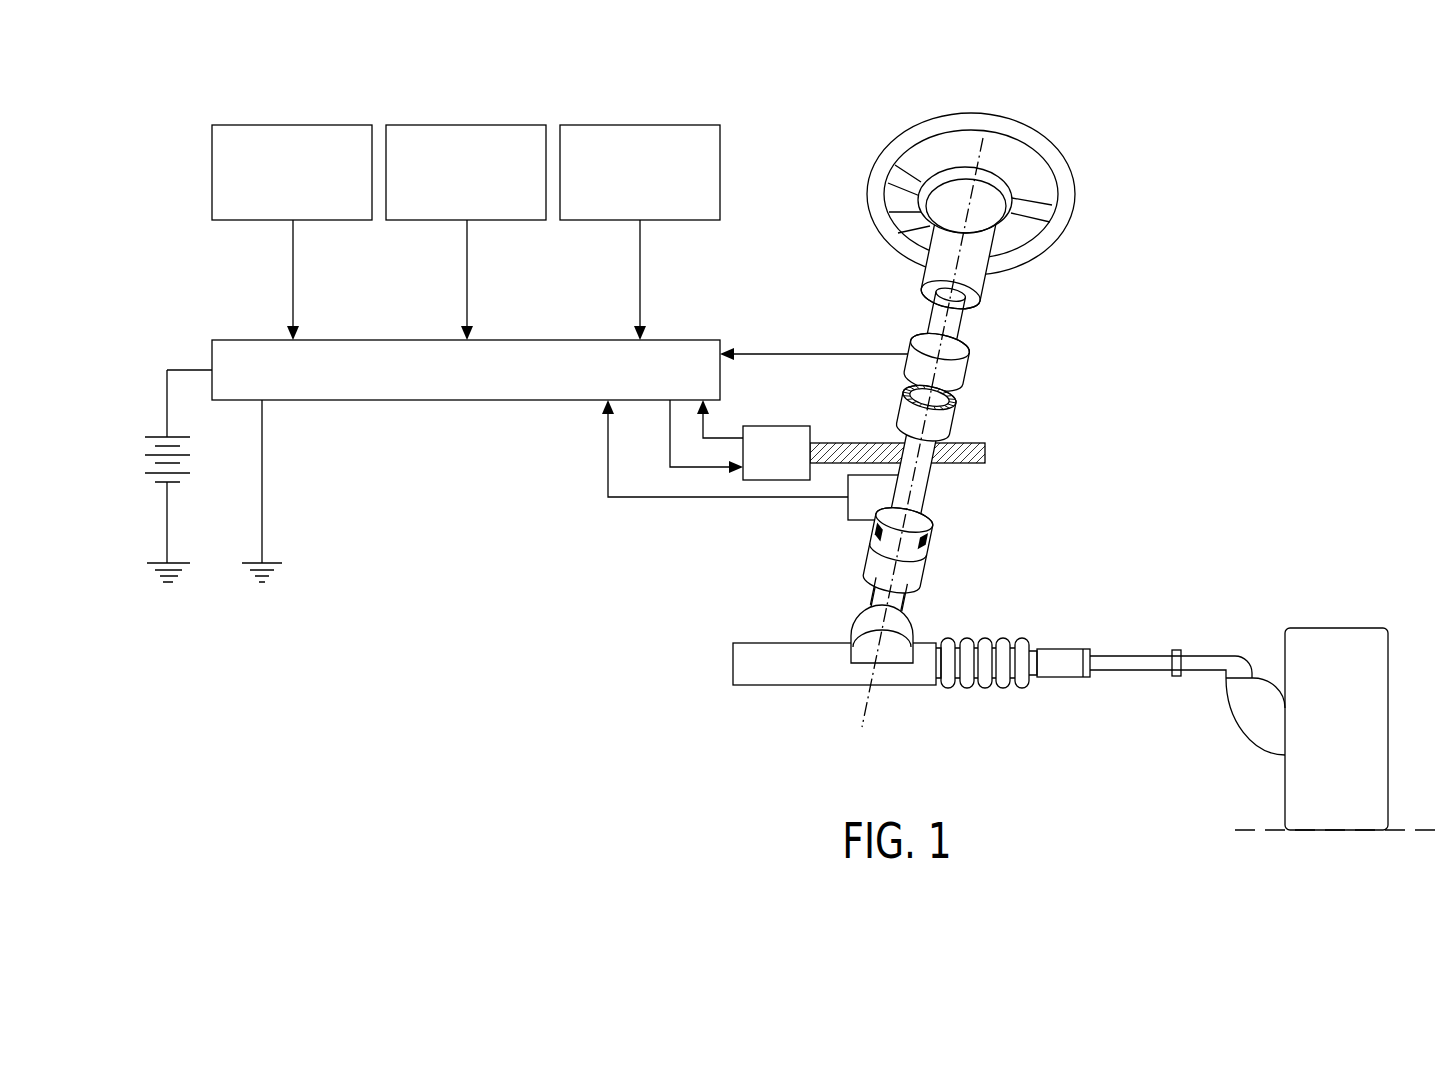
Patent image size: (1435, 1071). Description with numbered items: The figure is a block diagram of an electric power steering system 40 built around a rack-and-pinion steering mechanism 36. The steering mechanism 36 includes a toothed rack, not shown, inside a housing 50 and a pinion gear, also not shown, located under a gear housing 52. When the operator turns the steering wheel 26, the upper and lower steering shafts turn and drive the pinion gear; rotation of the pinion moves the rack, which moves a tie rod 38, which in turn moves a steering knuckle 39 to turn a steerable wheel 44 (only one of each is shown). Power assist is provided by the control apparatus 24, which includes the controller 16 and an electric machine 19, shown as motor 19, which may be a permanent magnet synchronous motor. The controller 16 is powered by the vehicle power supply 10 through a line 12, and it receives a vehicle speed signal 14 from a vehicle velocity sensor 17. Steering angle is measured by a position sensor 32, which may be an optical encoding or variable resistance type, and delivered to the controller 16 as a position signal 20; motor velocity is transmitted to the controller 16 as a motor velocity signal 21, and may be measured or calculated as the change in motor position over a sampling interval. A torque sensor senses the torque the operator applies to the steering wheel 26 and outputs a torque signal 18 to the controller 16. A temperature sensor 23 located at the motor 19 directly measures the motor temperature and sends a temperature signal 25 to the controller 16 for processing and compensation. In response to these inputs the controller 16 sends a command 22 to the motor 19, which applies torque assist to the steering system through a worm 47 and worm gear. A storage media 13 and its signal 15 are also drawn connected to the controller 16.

The vehicle power supply 10 is at (150, 460).
The line 12 is at (183, 367).
The storage media 13 is at (293, 125).
The vehicle speed signal 14 is at (467, 258).
The storage media signal 15 is at (293, 258).
The controller 16 is at (433, 405).
The vehicle velocity sensor 17 is at (467, 125).
The torque signal 18 is at (822, 353).
The electric machine 19 is at (790, 427).
The position signal 20 is at (735, 503).
The motor velocity signal 21 is at (733, 438).
The command 22 is at (685, 470).
The temperature sensor 23 is at (640, 125).
The control apparatus 24 is at (1168, 340).
The temperature signal 25 is at (640, 258).
The steering wheel 26 is at (1027, 142).
The position sensor 32 is at (845, 513).
The steering mechanism 36 is at (1005, 640).
The tie rod 38 is at (1128, 668).
The steering knuckle 39 is at (1252, 715).
The electric power steering system 40 is at (1250, 438).
The steerable wheel 44 is at (1323, 645).
The worm 47 is at (973, 457).
The housing 50 is at (773, 672).
The gear housing 52 is at (858, 622).